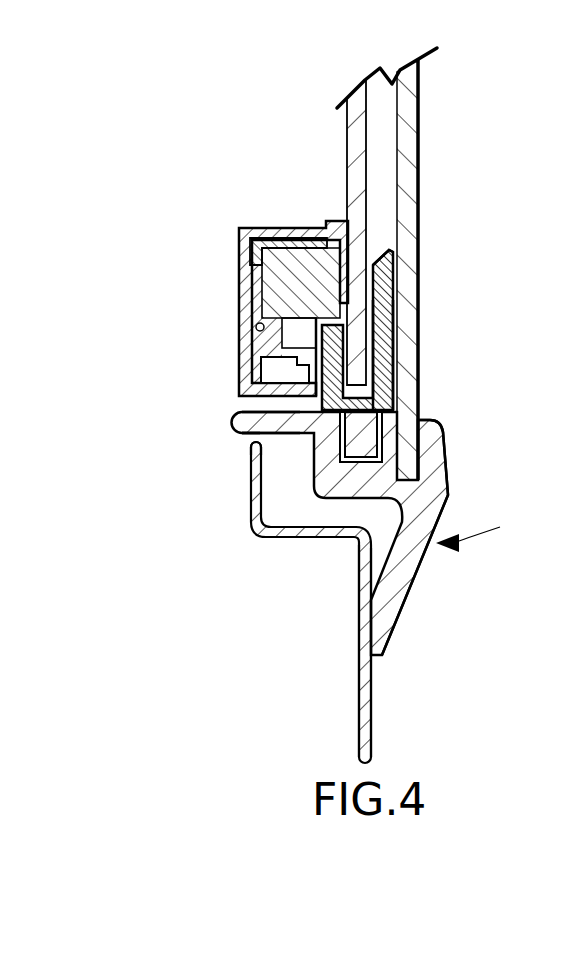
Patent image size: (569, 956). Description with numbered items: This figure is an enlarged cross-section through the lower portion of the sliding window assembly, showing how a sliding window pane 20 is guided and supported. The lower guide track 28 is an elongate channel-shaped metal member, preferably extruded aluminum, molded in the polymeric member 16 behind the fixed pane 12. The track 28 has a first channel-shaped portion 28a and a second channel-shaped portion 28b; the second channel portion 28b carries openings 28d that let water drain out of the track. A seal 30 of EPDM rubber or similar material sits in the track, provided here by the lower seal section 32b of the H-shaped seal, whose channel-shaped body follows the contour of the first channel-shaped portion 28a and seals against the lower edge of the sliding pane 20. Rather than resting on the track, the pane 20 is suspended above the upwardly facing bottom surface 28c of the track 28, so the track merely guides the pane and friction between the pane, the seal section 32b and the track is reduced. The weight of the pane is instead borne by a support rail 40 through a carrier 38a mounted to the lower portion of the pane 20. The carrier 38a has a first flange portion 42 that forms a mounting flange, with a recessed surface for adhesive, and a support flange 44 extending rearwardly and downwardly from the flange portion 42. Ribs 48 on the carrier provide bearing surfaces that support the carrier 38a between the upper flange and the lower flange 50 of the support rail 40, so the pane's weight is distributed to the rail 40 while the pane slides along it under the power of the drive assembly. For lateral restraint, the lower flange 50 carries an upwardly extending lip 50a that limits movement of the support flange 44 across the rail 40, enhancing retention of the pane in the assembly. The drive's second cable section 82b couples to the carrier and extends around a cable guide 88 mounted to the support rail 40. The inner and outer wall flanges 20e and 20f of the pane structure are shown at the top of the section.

The fixed pane 12 is at (349, 261).
The polymeric member 16 is at (486, 533).
The sliding window pane 20 is at (347, 126).
The inner wall flange 20e is at (297, 231).
The outer wall flange 20f is at (368, 209).
The lower guide track 28 is at (313, 455).
The first channel-shaped portion 28a is at (262, 404).
The second channel-shaped portion 28b is at (420, 424).
The bottom surface 28c is at (290, 530).
The openings 28d is at (441, 458).
The seal 30 is at (386, 268).
The lower seal section 32b is at (386, 322).
The carrier 38a is at (273, 237).
The support rail 40 is at (237, 228).
The first flange portion 42 is at (383, 246).
The support flange 44 is at (273, 280).
The ribs 48 is at (268, 228).
The lower flange 50 is at (273, 231).
The upwardly extending lip 50a is at (252, 404).
The second cable section 82b is at (255, 335).
The cable guide 88 is at (300, 348).